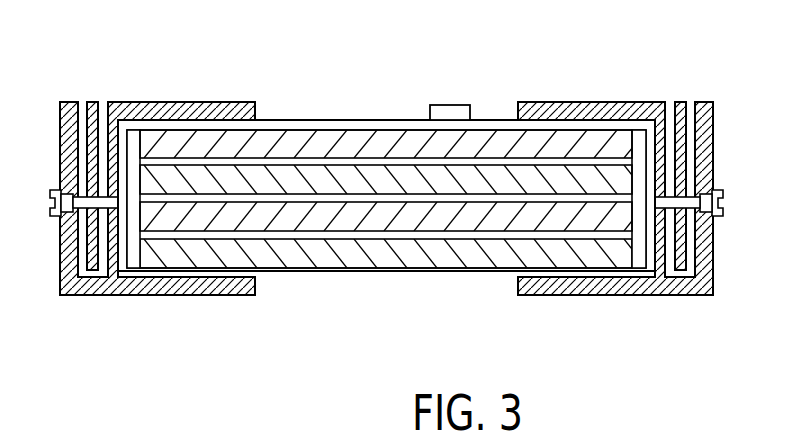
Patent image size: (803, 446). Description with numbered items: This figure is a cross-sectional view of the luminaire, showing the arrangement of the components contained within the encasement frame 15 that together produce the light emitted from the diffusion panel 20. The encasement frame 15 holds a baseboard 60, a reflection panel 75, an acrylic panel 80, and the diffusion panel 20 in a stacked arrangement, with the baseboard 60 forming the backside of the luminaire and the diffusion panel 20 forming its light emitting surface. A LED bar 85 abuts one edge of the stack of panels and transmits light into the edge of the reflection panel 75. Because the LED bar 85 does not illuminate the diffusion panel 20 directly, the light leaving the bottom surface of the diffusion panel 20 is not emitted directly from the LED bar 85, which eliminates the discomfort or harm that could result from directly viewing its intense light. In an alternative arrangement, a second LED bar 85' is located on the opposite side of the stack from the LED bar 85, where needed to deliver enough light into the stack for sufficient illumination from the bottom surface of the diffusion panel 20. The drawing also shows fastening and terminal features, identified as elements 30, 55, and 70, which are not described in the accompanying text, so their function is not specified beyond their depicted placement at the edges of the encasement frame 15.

The encasement frame 15 is at (683, 290).
The diffusion panel 20 is at (338, 257).
The screw 30 is at (722, 212).
The clamp plate 55 is at (680, 102).
The baseboard 60 is at (180, 140).
The terminal 70 is at (450, 107).
The reflection panel 75 is at (286, 177).
The acrylic panel 80 is at (412, 222).
The LED bar 85 is at (699, 199).
The second LED bar 85' is at (76, 196).